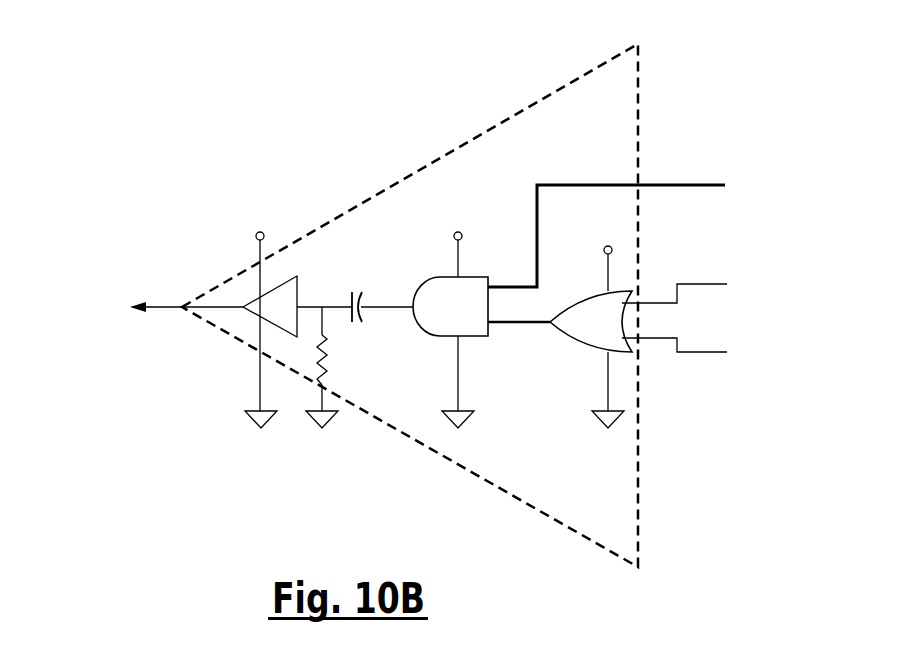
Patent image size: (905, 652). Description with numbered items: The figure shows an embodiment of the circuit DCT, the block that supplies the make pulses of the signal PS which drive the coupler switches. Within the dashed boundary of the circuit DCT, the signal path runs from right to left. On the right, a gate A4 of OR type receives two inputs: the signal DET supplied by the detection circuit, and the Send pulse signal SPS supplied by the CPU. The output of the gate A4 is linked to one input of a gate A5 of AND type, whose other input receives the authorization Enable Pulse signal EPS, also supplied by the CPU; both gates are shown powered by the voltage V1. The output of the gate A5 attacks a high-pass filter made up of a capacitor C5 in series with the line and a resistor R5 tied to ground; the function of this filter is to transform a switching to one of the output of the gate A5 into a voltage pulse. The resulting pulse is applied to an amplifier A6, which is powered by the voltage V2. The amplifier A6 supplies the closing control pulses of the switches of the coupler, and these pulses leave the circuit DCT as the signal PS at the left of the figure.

The circuit DCT is at (608, 138).
The signal PS is at (166, 307).
The amplifier A6 is at (270, 306).
The voltage V2 is at (261, 317).
The resistor R5 is at (329, 367).
The capacitor C5 is at (355, 295).
The gate of AND type A5 is at (450, 306).
The voltage V1 is at (533, 316).
The Enable Pulse signal EPS is at (627, 231).
The gate of OR type A4 is at (591, 321).
The signal DET is at (697, 287).
The Send pulse signal SPS is at (698, 352).